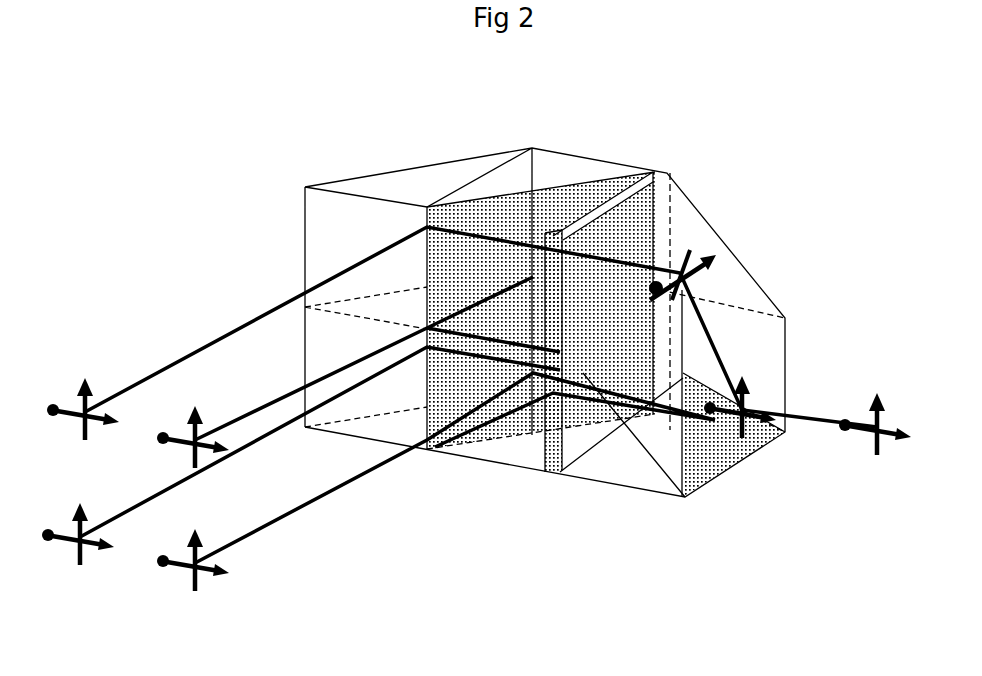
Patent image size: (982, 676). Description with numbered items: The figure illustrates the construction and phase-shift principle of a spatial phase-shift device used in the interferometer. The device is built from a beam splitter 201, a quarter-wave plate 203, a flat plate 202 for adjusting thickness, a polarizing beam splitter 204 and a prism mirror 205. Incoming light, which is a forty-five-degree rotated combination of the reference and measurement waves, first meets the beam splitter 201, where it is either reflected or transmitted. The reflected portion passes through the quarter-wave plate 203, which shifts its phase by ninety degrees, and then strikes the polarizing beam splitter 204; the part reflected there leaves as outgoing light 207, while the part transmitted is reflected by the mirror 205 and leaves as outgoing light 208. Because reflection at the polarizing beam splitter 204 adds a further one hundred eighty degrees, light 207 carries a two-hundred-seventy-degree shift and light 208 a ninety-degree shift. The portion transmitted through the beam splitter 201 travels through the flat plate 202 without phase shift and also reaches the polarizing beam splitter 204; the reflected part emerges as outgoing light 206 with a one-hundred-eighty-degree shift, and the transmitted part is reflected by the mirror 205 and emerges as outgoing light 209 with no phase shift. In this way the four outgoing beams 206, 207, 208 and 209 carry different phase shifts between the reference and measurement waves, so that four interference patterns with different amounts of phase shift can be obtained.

The beam splitter 201 is at (737, 463).
The flat plate 202 is at (557, 474).
The quarter-wave plate 203 is at (662, 173).
The polarizing beam splitter 204 is at (556, 188).
The prism mirror 205 is at (418, 174).
The outgoing light 206 is at (203, 576).
The outgoing light 207 is at (206, 420).
The outgoing light 208 is at (72, 403).
The outgoing light 209 is at (74, 548).